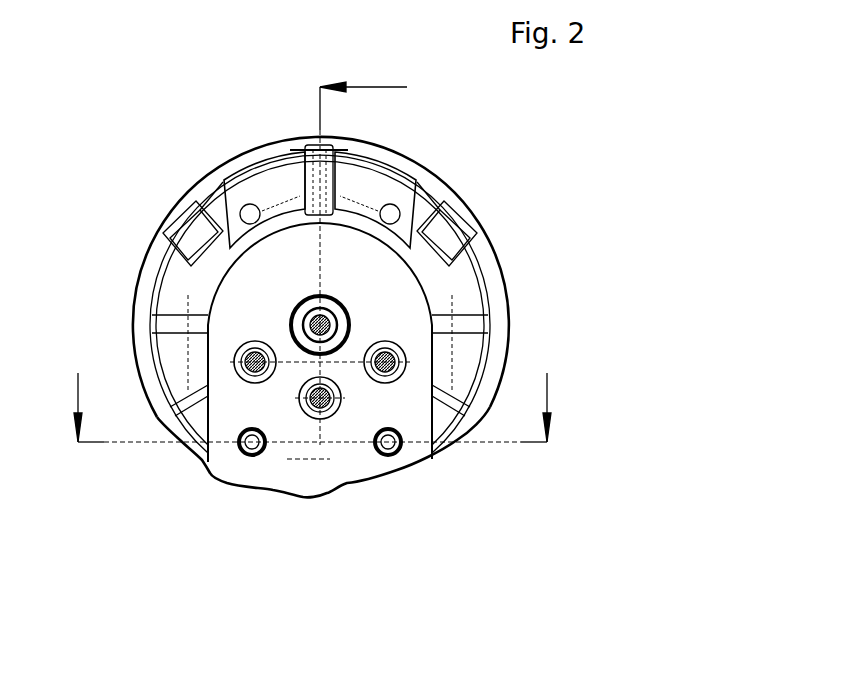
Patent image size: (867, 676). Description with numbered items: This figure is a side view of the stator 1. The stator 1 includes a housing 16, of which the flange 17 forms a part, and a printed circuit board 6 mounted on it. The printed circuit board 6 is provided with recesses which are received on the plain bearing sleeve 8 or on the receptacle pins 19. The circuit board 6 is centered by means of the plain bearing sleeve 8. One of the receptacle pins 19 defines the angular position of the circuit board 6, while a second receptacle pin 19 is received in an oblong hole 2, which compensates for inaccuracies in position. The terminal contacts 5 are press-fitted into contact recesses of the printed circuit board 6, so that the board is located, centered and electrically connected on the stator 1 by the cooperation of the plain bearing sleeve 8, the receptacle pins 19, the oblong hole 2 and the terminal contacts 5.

The stator 1 is at (690, 163).
The oblong hole 2 is at (237, 431).
The terminal contacts 5 is at (259, 343).
The printed circuit board 6 is at (294, 273).
The plain bearing sleeve 8 is at (333, 311).
The housing 16 is at (468, 218).
The flange 17 is at (468, 218).
The receptacle pin 19 is at (245, 455).